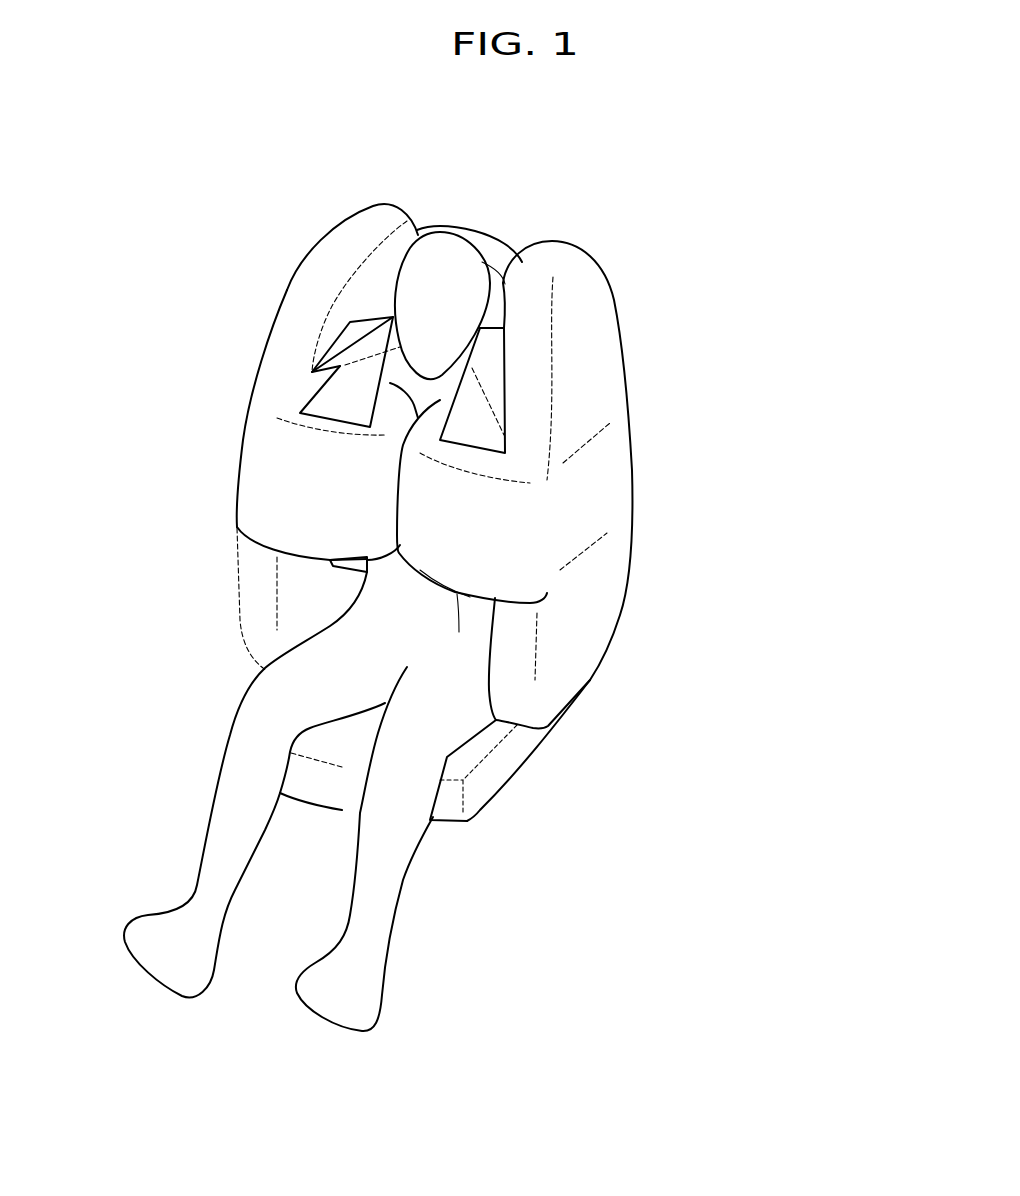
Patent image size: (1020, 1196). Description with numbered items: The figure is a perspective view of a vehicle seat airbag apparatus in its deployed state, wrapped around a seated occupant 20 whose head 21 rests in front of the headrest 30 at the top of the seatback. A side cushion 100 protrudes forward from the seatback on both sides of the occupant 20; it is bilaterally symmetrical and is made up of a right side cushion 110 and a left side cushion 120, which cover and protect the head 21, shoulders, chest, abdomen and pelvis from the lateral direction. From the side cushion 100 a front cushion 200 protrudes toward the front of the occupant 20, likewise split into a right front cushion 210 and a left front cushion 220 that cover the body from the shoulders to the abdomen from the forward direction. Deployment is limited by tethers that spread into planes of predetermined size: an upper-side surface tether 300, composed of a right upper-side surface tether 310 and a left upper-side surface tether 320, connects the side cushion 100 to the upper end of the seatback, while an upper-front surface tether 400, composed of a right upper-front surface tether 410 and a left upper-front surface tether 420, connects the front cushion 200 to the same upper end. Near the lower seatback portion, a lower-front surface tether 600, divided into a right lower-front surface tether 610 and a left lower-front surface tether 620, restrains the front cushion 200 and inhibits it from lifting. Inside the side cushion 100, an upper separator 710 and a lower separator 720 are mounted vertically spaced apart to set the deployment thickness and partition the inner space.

The occupant 20 is at (397, 612).
The head 21 is at (452, 253).
The headrest 30 is at (495, 247).
The side cushion 100 is at (532, 461).
The right side cushion 110 is at (370, 230).
The left side cushion 120 is at (597, 477).
The front cushion 200 is at (475, 501).
The right front cushion 210 is at (313, 483).
The left front cushion 220 is at (473, 497).
The upper-side surface tether 300 is at (488, 329).
The right upper-side surface tether 310 is at (348, 337).
The left upper-side surface tether 320 is at (477, 363).
The upper-front surface tether 400 is at (444, 385).
The right upper-front surface tether 410 is at (340, 400).
The left upper-front surface tether 420 is at (473, 417).
The lower-front surface tether 600 is at (437, 689).
The right lower-front surface tether 610 is at (330, 567).
The left lower-front surface tether 620 is at (459, 633).
The upper separator 710 is at (587, 445).
The lower separator 720 is at (587, 553).